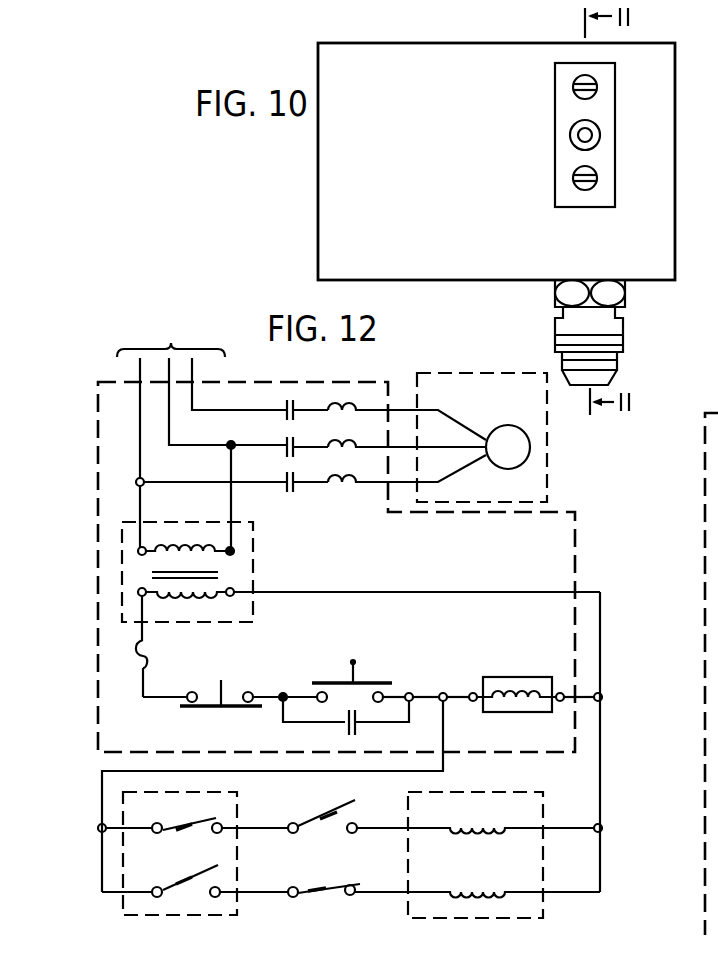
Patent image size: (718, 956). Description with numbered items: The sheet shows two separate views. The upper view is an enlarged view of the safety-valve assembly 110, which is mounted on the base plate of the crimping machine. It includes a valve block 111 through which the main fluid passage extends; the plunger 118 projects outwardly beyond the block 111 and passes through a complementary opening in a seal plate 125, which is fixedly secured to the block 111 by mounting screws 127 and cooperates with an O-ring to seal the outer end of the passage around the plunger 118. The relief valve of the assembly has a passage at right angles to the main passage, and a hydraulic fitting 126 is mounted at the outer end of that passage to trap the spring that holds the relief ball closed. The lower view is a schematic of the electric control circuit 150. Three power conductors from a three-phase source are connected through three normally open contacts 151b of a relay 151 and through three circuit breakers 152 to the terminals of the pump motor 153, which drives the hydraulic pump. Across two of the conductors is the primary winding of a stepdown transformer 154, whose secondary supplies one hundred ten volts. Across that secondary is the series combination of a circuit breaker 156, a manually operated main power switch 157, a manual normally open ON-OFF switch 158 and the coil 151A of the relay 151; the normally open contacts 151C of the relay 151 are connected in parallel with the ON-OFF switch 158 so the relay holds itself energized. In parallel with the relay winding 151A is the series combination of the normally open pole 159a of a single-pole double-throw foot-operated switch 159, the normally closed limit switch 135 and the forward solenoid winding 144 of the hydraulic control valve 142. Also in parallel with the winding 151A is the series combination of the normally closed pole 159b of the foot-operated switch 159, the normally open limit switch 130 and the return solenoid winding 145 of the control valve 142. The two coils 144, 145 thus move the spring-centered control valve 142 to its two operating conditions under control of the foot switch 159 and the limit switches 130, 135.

In FIG. 10, the safety-valve assembly 110 is at (314, 198).
In FIG. 10, the valve block 111 is at (438, 58).
In FIG. 10, the plunger 118 is at (570, 139).
In FIG. 10, the hydraulic fitting 126 is at (573, 183).
In FIG. 10, the mounting screws 127 is at (573, 93).
In FIG. 10, the seal plate 125 is at (612, 341).
In FIG. 12, the electric control circuit 150 is at (156, 334).
In FIG. 12, the relay 151 is at (524, 694).
In FIG. 12, the coil of the relay 151A is at (500, 712).
In FIG. 12, the normally open contacts of the relay 151b is at (286, 402).
In FIG. 12, the normally open contacts of the relay 151C is at (346, 730).
In FIG. 12, the circuit breakers 152 is at (343, 476).
In FIG. 12, the pump motor 153 is at (518, 408).
In FIG. 12, the stepdown transformer 154 is at (240, 575).
In FIG. 12, the circuit breaker 156 is at (152, 657).
In FIG. 12, the main power switch 157 is at (210, 712).
In FIG. 12, the ON-OFF switch 158 is at (333, 683).
In FIG. 12, the foot-operated switch 159 is at (203, 863).
In FIG. 12, the normally open pole of the foot-operated switch 159a is at (200, 876).
In FIG. 12, the normally closed pole of the foot-operated switch 159b is at (199, 823).
In FIG. 12, the limit switch 130 is at (326, 817).
In FIG. 12, the limit switch 135 is at (346, 886).
In FIG. 12, the control valve 142 is at (505, 842).
In FIG. 12, the forward solenoid winding 144 is at (470, 886).
In FIG. 12, the return solenoid winding 145 is at (466, 838).